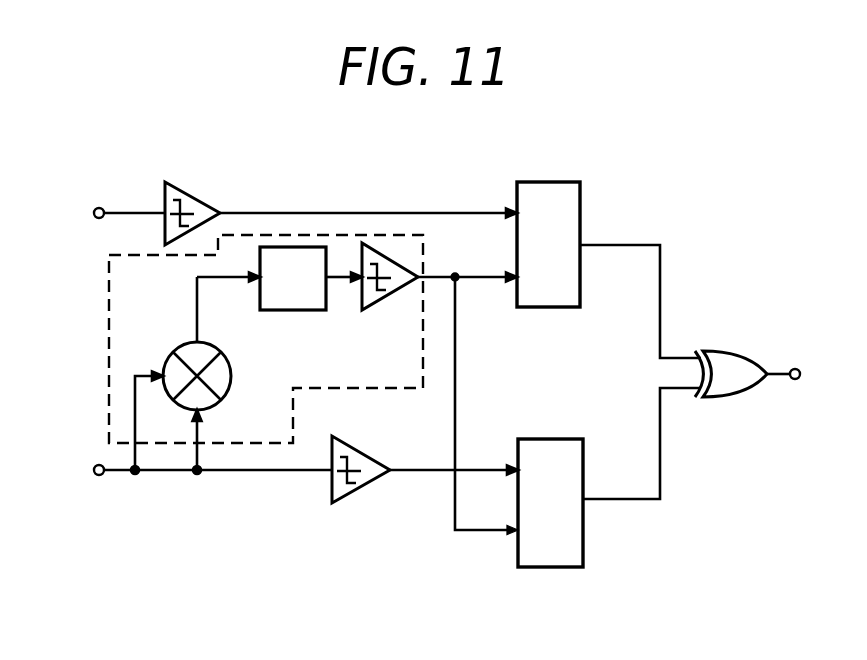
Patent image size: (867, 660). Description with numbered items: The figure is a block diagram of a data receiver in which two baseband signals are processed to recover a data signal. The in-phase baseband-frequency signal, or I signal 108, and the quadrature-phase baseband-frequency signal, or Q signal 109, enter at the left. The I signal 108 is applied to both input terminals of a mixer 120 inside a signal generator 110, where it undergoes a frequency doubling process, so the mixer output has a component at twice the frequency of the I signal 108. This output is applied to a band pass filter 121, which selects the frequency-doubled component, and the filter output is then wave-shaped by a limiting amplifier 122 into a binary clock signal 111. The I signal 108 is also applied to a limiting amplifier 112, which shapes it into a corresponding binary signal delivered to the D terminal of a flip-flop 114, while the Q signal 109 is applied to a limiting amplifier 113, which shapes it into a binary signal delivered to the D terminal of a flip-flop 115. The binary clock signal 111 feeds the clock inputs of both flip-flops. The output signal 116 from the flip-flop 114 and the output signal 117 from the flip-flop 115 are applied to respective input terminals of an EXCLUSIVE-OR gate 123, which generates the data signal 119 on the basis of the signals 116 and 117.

The in-phase baseband-frequency signal 108 is at (95, 478).
The quadrature-phase baseband-frequency signal 109 is at (99, 208).
The signal generator 110 is at (99, 333).
The binary clock signal 111 is at (455, 368).
The limiting amplifier 112 is at (337, 503).
The limiting amplifier 113 is at (183, 182).
The flip-flop 114 is at (583, 553).
The flip-flop 115 is at (568, 182).
The output signal 116 is at (643, 499).
The output signal 117 is at (660, 277).
The data signal 119 is at (780, 370).
The mixer 120 is at (228, 364).
The band pass filter 121 is at (260, 298).
The limiting amplifier 122 is at (375, 243).
The EXCLUSIVE-OR gate 123 is at (720, 398).